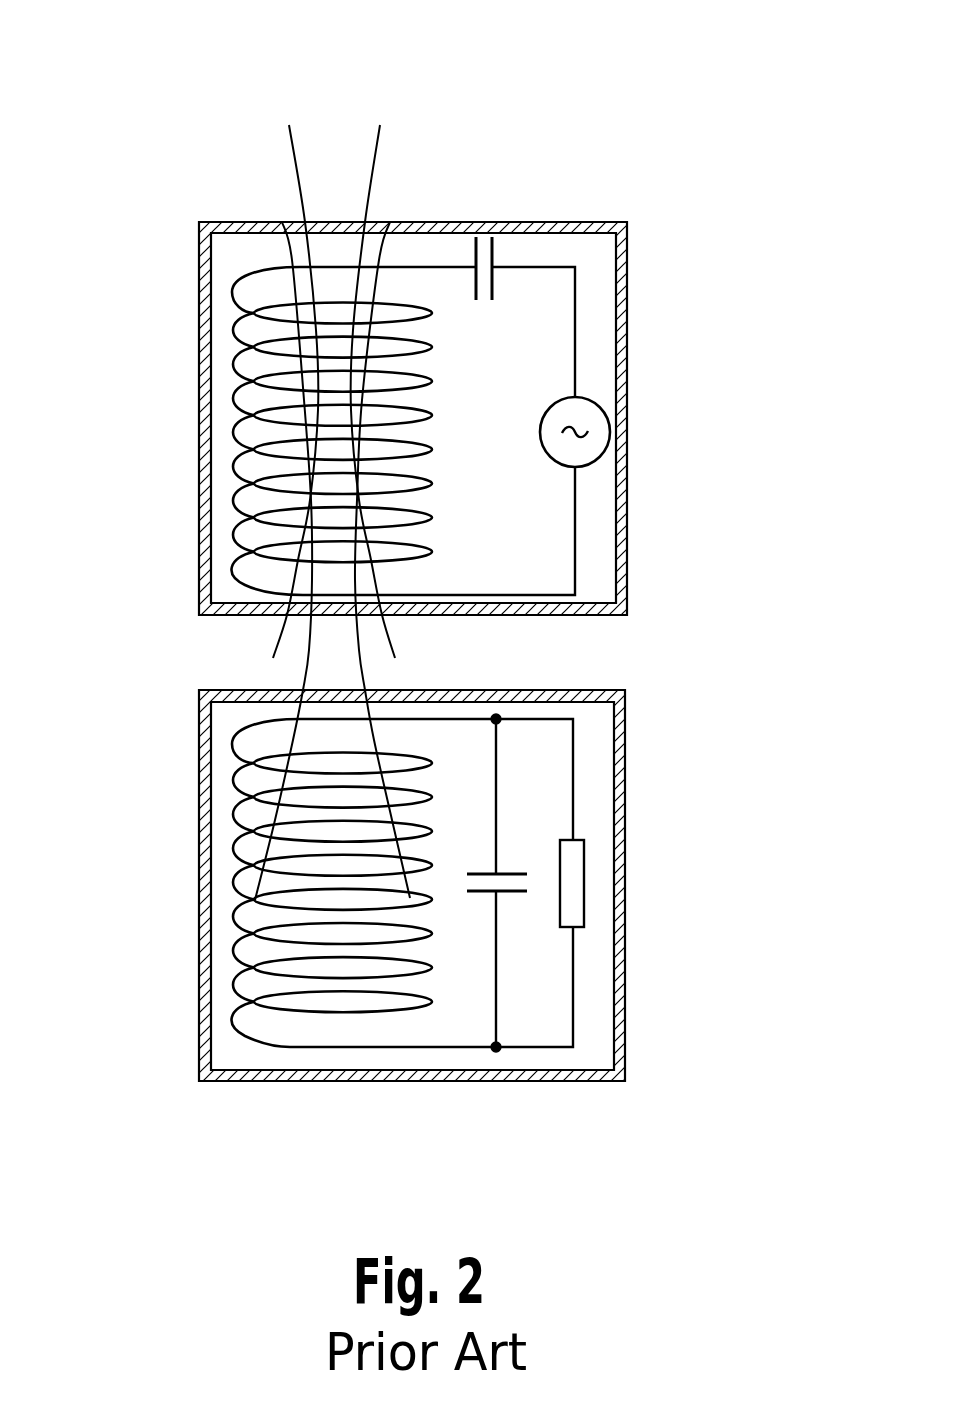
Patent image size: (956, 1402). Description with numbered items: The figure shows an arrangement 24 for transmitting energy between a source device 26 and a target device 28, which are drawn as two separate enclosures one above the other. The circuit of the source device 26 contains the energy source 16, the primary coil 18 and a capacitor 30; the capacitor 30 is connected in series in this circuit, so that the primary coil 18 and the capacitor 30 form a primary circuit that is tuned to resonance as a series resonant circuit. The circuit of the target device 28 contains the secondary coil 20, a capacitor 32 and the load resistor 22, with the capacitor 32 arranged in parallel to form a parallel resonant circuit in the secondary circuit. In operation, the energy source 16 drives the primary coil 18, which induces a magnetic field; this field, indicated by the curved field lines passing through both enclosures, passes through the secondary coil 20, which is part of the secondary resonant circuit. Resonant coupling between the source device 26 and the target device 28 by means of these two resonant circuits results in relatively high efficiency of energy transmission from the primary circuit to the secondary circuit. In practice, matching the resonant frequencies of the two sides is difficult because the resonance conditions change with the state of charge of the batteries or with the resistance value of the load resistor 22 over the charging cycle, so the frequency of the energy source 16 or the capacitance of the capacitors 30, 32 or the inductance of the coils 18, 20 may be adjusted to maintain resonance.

The energy source 16 is at (597, 438).
The primary coil 18 is at (233, 428).
The secondary coil 20 is at (233, 845).
The load resistor 22 is at (572, 883).
The arrangement 24 is at (538, 90).
The source device 26 is at (627, 276).
The target device 28 is at (617, 742).
The capacitor 30 is at (494, 282).
The capacitor 32 is at (486, 874).